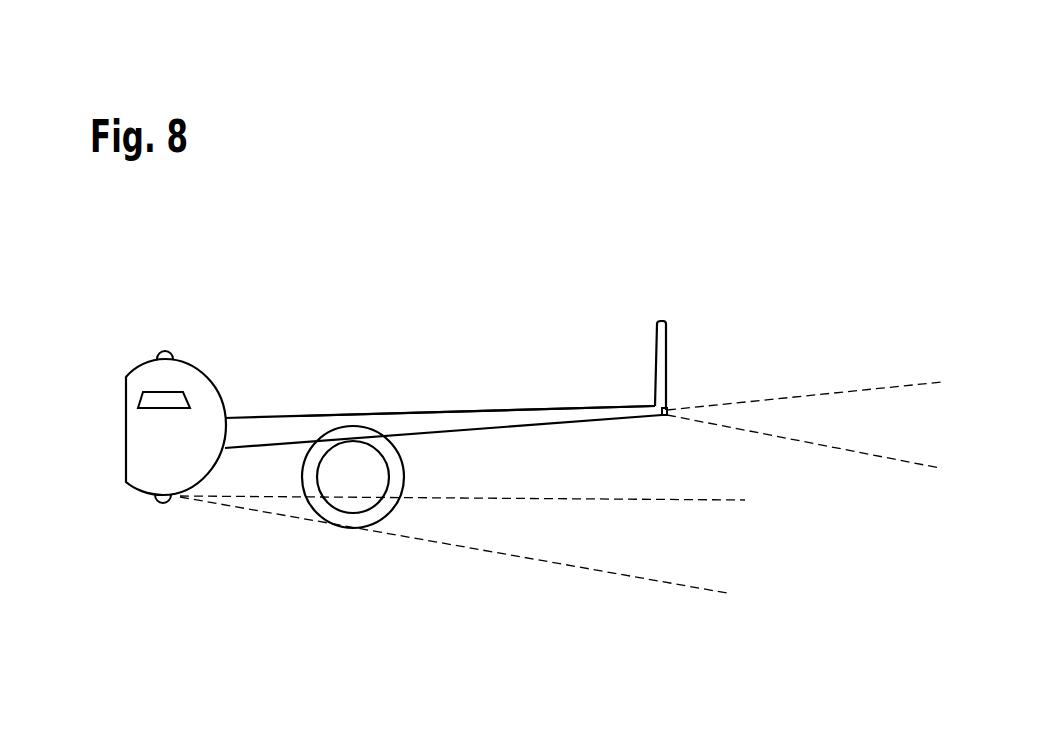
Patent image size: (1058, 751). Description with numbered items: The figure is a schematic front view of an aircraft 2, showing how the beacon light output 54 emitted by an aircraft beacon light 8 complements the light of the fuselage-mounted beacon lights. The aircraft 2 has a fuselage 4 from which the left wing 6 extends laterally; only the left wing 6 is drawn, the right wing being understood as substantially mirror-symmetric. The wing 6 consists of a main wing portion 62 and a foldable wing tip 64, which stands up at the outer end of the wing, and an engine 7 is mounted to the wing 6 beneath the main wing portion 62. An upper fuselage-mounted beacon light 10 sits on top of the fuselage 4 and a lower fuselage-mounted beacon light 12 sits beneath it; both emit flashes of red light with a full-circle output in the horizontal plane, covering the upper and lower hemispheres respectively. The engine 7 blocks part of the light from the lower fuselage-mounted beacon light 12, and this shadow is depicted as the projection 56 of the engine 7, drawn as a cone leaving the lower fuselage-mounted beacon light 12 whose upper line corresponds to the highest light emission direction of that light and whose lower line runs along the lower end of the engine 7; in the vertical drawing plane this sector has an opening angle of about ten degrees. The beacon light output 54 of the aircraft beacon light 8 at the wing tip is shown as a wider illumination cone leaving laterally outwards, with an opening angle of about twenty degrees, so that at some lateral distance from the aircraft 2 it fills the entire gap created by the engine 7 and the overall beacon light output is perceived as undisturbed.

The aircraft 2 is at (112, 328).
The fuselage 4 is at (148, 445).
The wing 6 is at (472, 294).
The engine 7 is at (395, 475).
The aircraft beacon light 8 is at (666, 418).
The upper fuselage-mounted beacon light 10 is at (165, 350).
The lower fuselage-mounted beacon light 12 is at (163, 505).
The beacon light output 54 is at (895, 387).
The projection of the engine 56 is at (498, 553).
The main wing portion 62 is at (542, 415).
The foldable wing tip 64 is at (665, 345).